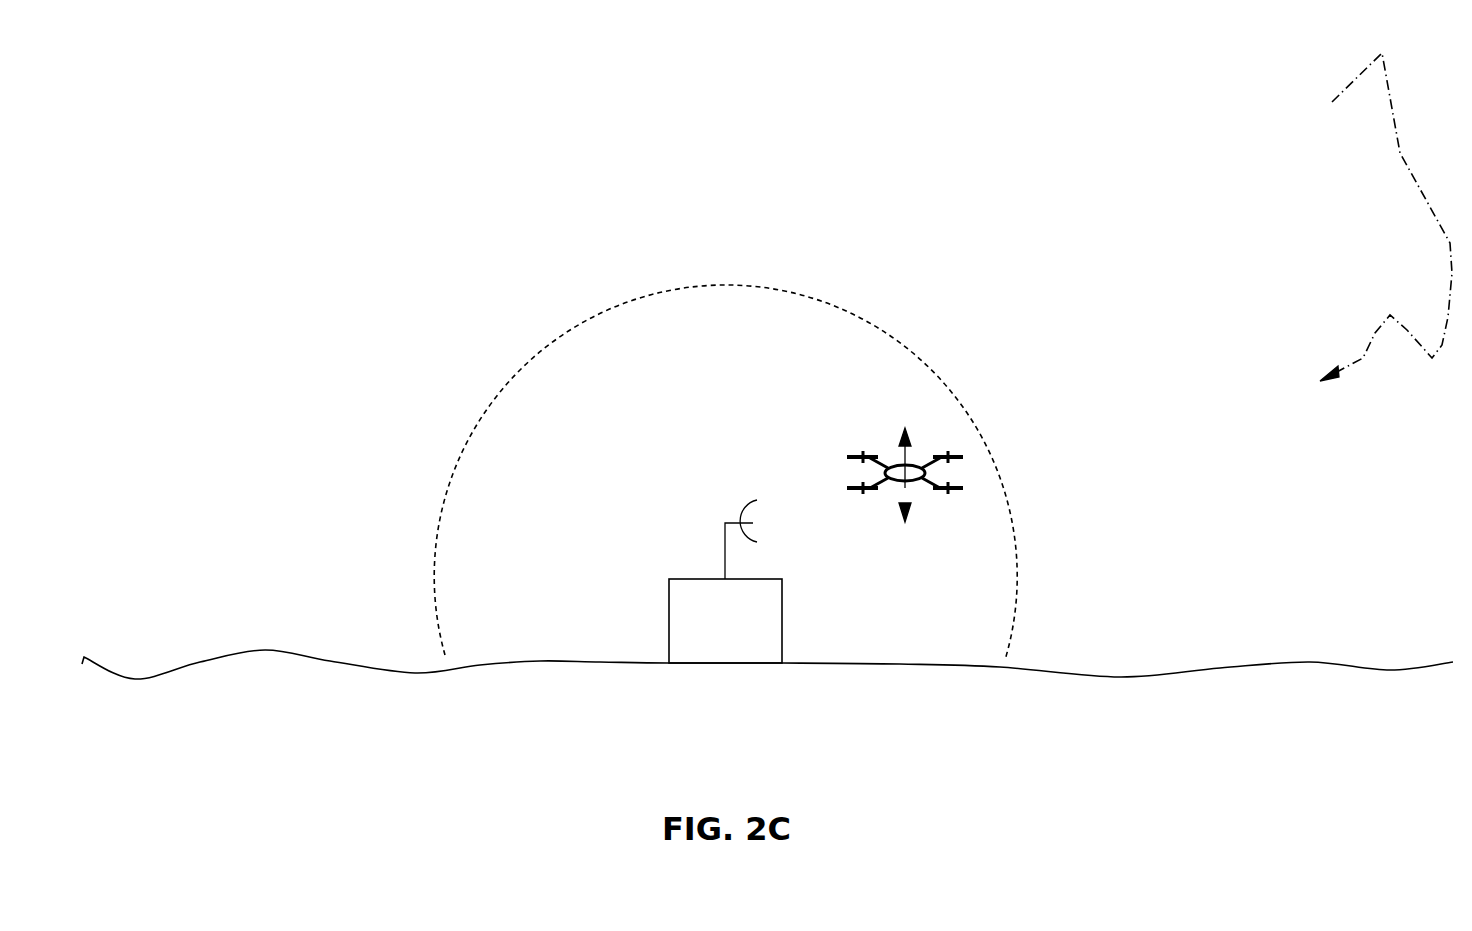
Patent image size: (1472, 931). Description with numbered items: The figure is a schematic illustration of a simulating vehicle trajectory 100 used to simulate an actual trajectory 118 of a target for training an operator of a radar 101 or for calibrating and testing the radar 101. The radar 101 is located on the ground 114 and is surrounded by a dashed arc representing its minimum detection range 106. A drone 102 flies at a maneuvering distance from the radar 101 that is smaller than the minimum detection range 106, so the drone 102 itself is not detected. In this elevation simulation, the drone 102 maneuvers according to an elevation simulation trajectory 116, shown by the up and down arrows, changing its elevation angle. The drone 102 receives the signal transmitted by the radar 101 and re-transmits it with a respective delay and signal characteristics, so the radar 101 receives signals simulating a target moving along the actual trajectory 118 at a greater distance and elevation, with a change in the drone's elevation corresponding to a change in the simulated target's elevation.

The simulating vehicle trajectory 100 is at (730, 150).
The radar 101 is at (669, 608).
The drone 102 is at (915, 483).
The minimum detection range 106 is at (505, 384).
The ground 114 is at (615, 662).
The elevation simulation trajectory 116 is at (899, 447).
The actual trajectory 118 is at (1400, 152).